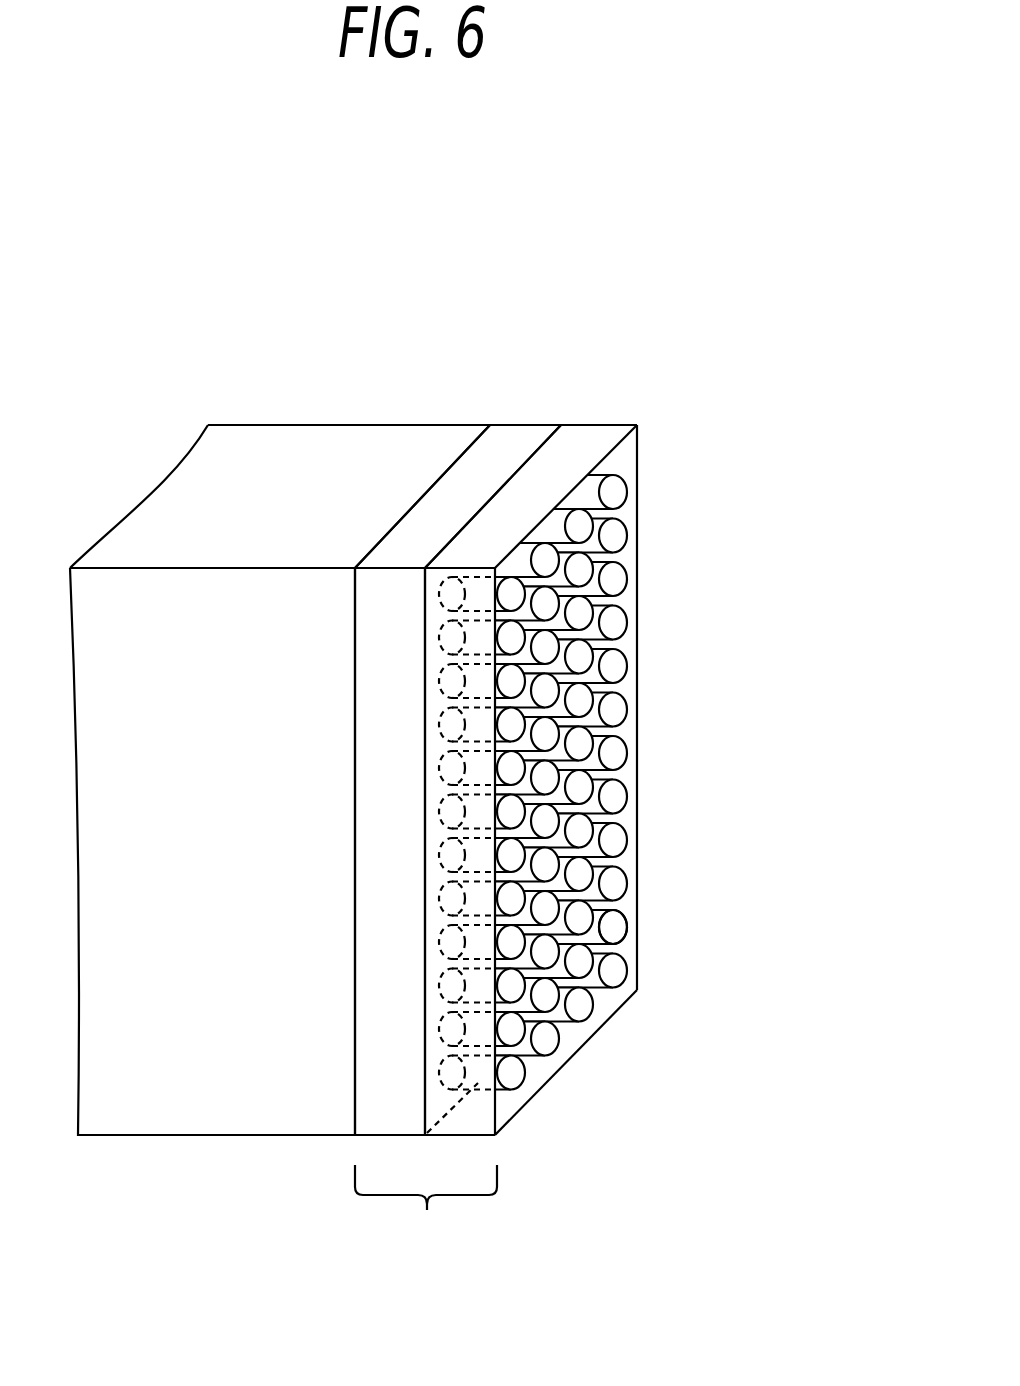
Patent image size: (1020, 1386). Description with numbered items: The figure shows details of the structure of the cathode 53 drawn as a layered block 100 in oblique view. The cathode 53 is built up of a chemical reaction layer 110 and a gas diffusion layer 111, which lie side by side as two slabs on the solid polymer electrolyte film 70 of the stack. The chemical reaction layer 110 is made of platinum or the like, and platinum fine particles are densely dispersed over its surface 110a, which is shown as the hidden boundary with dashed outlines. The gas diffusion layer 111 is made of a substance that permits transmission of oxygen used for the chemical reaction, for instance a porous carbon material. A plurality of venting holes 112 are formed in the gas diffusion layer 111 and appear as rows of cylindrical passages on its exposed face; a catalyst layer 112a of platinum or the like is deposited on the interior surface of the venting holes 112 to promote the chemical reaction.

The heat exchanger / core unit 100 is at (203, 1175).
The solid polymer electrolyte film 70 is at (320, 462).
The chemical reaction layer 110 is at (497, 462).
The surface of the chemical reaction layer 110a is at (445, 786).
The gas diffusion layer 111 is at (585, 450).
The venting holes 112 is at (612, 953).
The catalyst layer 112a is at (612, 925).
The cathode 53 is at (426, 1217).